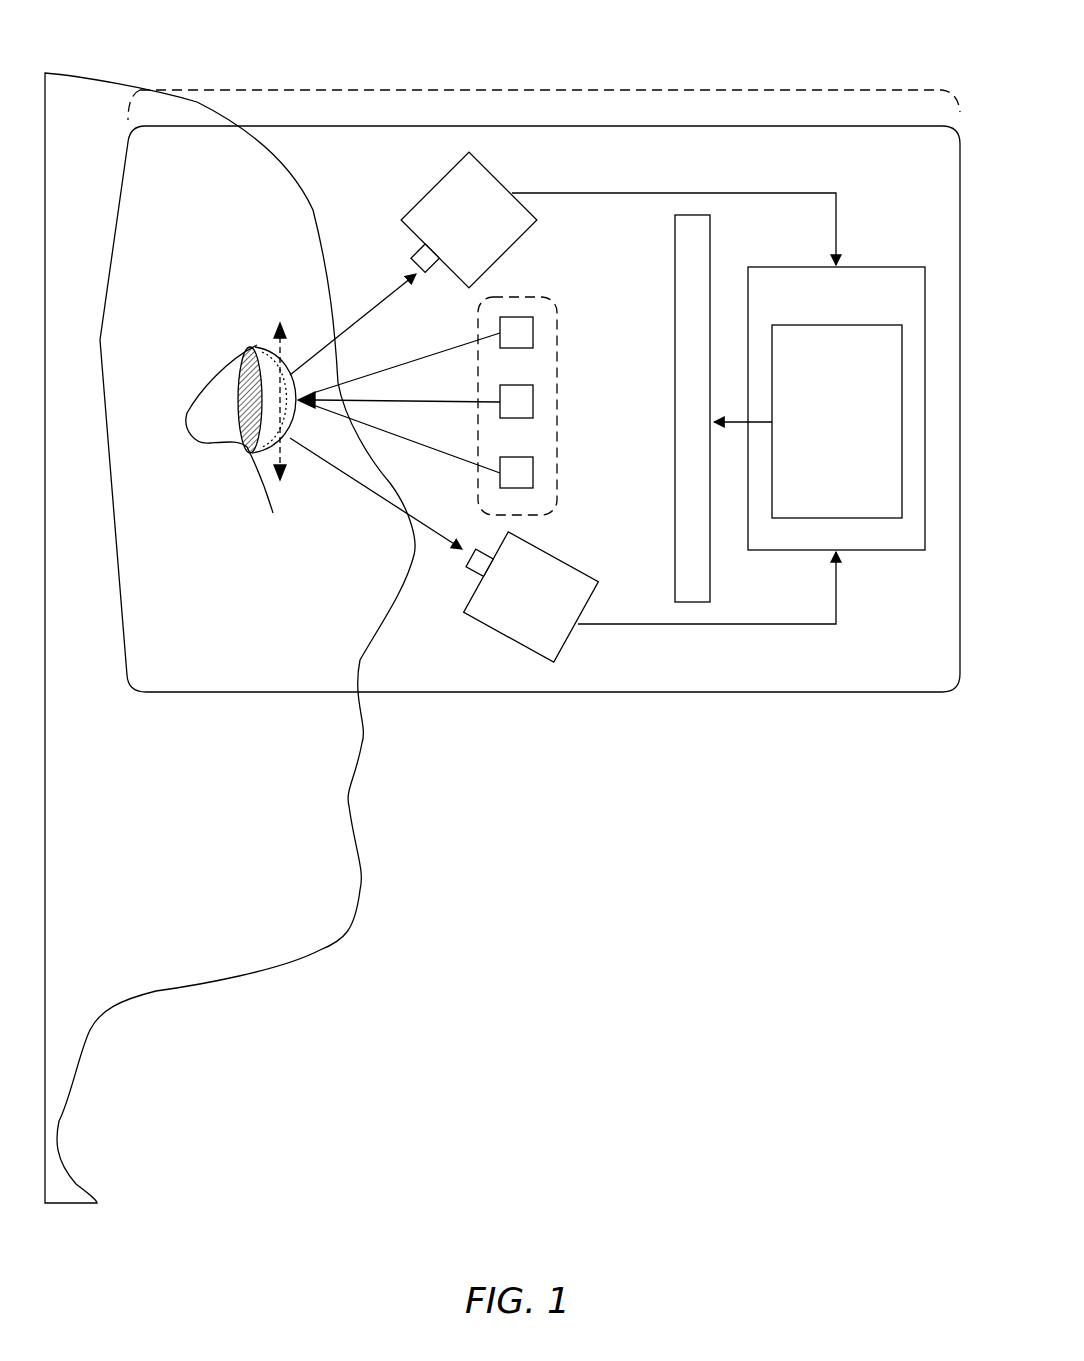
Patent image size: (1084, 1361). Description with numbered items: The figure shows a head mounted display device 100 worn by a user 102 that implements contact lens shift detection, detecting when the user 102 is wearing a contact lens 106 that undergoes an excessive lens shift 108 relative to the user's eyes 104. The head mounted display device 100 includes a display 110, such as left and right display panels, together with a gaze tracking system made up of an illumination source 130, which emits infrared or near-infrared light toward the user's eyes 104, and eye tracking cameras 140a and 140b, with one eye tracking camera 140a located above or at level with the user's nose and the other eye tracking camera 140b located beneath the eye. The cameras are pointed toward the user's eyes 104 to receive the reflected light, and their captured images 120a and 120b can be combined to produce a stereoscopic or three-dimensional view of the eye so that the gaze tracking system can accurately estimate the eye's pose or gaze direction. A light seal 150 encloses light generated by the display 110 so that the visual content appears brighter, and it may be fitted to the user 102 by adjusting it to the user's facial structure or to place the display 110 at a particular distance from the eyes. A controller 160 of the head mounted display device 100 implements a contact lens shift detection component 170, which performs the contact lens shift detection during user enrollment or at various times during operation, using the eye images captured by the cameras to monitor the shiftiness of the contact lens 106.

The head mounted display device 100 is at (530, 448).
The user 102 is at (270, 904).
The user's eyes 104 is at (240, 427).
The contact lens 106 is at (252, 345).
The lens shift 108 is at (282, 357).
The display 110 is at (649, 408).
The captured image 120a is at (674, 209).
The captured image 120b is at (707, 606).
The illumination source 130 is at (562, 417).
The eye tracking camera 140a is at (495, 246).
The eye tracking camera 140b is at (557, 622).
The light seal 150 is at (545, 90).
The controller 160 is at (907, 302).
The contact lens shift detection component 170 is at (855, 489).